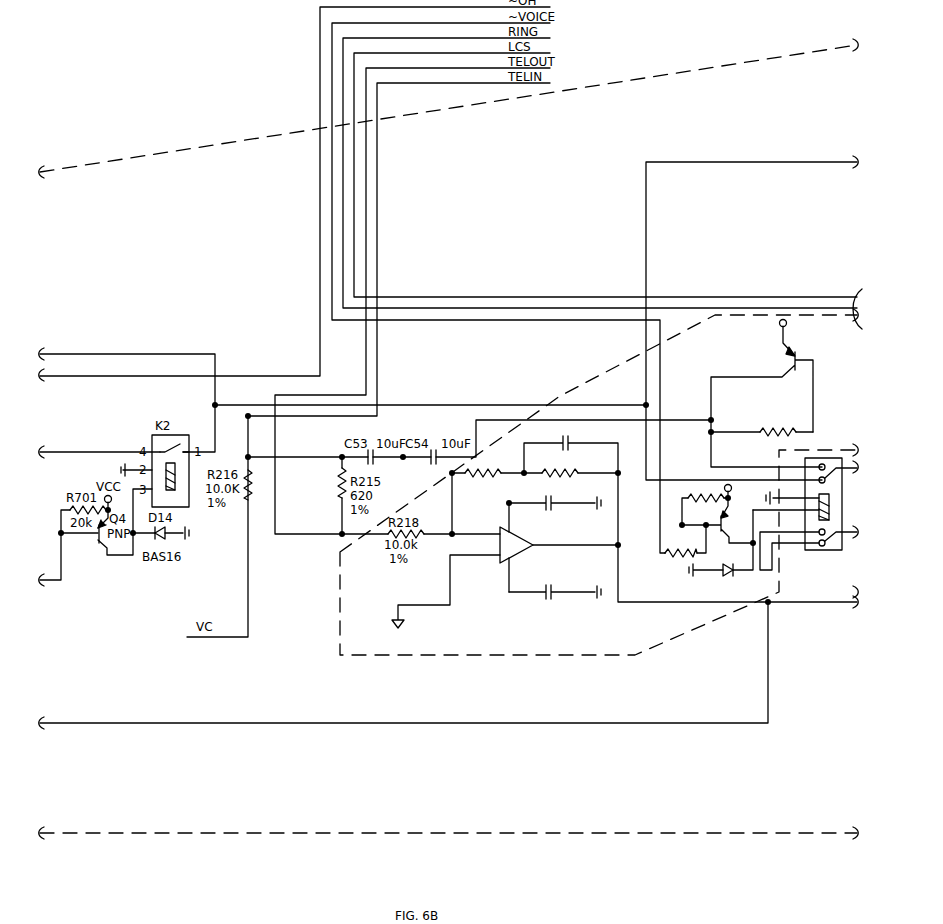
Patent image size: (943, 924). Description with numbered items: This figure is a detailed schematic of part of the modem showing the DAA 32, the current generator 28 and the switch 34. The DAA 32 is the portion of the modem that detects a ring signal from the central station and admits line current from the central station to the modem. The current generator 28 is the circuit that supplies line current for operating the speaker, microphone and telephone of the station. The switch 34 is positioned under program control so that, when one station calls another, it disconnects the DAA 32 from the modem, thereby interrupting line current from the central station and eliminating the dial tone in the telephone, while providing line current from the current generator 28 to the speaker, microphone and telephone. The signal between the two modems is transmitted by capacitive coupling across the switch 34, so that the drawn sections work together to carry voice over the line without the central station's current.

The current generator 28 is at (702, 361).
The DAA 32 is at (233, 797).
The switch 34 is at (834, 589).